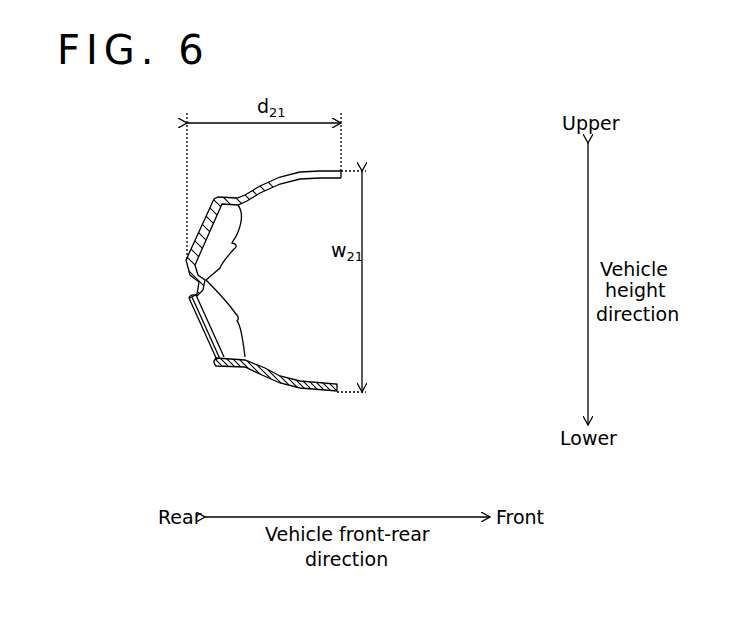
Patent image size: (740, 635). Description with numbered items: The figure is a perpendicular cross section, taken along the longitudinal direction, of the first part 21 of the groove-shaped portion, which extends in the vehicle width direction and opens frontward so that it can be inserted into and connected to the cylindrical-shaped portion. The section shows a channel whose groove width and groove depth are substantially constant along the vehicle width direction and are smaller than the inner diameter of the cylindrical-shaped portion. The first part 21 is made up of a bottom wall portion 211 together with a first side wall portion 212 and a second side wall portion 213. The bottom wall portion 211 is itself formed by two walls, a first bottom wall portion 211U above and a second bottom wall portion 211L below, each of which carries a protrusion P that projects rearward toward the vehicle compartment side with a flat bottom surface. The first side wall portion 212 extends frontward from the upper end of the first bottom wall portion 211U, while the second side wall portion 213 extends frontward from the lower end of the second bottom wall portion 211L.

The first part 21 is at (118, 216).
The protrusion P is at (188, 235).
The first side wall portion 212 is at (277, 185).
The first bottom wall portion 211U is at (235, 245).
The bottom wall portion 211 is at (263, 279).
The second bottom wall portion 211L is at (238, 319).
The second side wall portion 213 is at (292, 379).